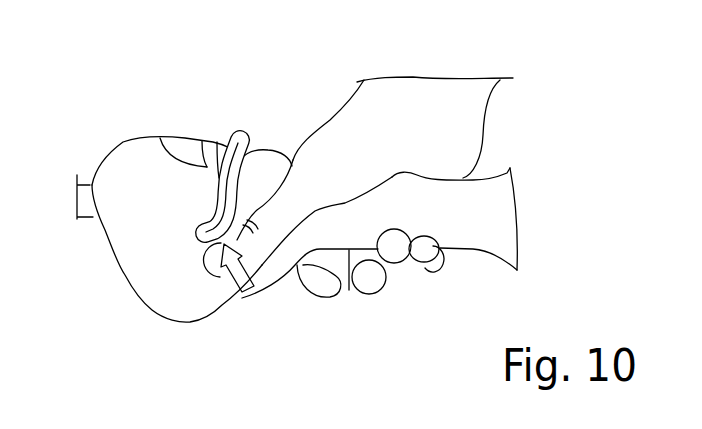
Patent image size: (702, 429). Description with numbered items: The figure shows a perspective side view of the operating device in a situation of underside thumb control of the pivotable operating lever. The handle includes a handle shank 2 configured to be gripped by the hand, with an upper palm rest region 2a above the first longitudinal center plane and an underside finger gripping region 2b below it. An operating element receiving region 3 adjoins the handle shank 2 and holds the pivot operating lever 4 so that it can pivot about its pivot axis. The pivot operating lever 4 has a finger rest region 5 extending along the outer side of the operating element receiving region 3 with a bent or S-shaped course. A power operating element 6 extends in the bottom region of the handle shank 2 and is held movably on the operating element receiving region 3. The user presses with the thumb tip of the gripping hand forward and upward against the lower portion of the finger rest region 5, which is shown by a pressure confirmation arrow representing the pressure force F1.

The handle shank 2 is at (468, 232).
The upper palm rest region 2a is at (427, 178).
The underside finger gripping region 2b is at (357, 250).
The operating element receiving region 3 is at (150, 252).
The pivot operating lever 4 is at (160, 138).
The finger rest region 5 is at (272, 153).
The power operating element 6 is at (328, 268).
The pressure force F1 is at (241, 278).